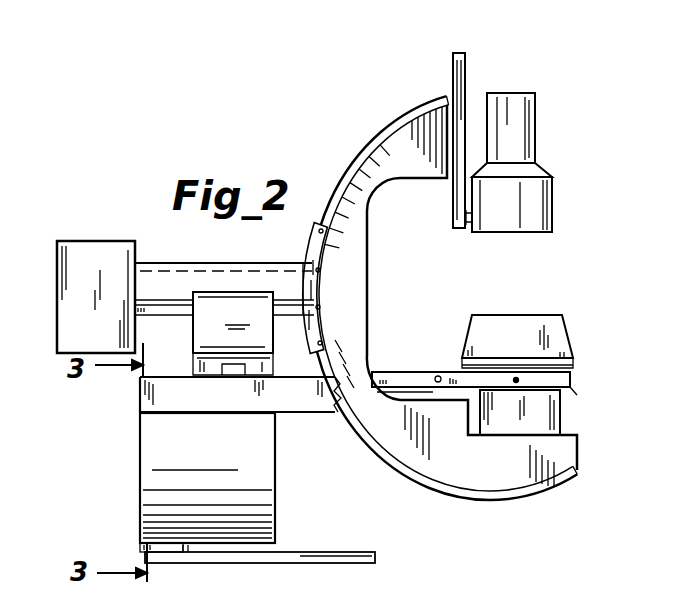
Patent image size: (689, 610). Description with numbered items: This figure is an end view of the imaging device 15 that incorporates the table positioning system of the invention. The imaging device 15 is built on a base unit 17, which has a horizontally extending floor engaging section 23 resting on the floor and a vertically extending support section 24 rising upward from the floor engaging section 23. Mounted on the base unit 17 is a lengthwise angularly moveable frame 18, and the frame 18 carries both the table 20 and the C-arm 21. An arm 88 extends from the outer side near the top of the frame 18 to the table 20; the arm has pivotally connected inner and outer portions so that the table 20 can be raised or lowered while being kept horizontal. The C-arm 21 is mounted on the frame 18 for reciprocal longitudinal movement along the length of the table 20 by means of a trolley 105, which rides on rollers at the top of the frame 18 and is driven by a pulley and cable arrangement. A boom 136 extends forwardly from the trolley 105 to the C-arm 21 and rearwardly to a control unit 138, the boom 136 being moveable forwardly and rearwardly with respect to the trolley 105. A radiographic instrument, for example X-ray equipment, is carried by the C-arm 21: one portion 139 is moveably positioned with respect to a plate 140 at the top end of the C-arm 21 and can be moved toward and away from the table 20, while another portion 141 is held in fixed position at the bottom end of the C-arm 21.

The imaging device 15 is at (86, 440).
The base unit 17 is at (352, 552).
The frame 18 is at (276, 479).
The table 20 is at (549, 333).
The C-arm 21 is at (580, 460).
The floor engaging section 23 is at (272, 553).
The support section 24 is at (143, 551).
The arm 88 is at (279, 396).
The trolley 105 is at (217, 337).
The boom 136 is at (243, 280).
The control unit 138 is at (90, 250).
The portion of radiographic instrument 139 is at (518, 148).
The plate 140 is at (459, 78).
The portion of radiographic instrument 141 is at (578, 396).